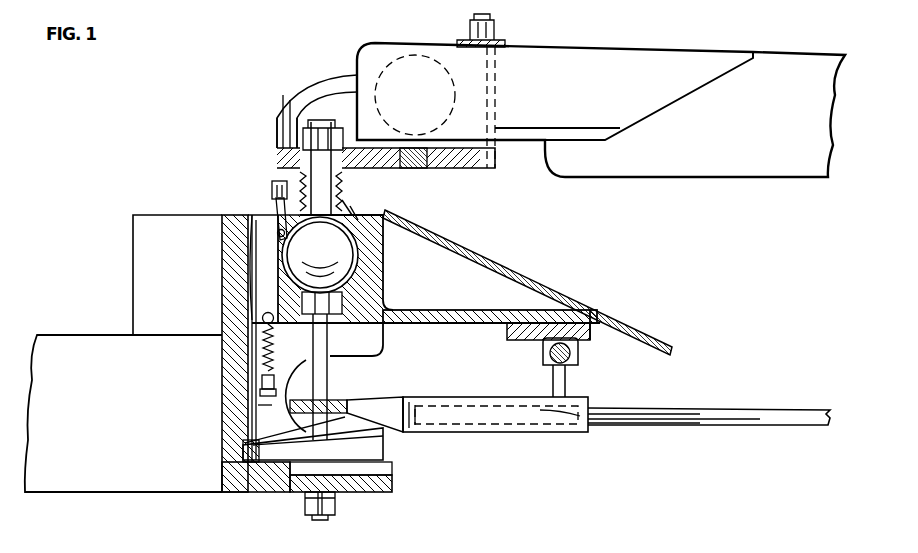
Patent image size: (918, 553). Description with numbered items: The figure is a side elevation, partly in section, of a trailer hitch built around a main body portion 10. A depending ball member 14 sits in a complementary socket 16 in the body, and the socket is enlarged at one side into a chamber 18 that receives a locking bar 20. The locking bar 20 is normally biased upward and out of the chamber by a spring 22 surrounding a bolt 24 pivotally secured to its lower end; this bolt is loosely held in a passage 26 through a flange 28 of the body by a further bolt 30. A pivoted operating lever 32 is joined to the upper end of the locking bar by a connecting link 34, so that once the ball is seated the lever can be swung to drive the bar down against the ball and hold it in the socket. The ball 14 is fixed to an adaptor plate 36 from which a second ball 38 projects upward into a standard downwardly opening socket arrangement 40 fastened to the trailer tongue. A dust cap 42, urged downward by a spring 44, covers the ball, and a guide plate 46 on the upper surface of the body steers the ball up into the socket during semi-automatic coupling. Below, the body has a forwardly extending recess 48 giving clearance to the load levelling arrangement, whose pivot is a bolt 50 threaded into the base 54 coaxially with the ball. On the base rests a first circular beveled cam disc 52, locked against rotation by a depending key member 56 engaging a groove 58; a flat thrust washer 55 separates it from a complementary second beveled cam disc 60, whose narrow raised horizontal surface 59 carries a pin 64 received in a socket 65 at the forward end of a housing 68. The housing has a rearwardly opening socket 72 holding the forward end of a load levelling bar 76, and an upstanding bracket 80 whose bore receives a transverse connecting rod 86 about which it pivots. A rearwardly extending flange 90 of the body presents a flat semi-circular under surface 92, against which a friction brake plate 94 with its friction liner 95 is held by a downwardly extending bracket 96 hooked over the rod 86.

The main body portion 10 is at (236, 262).
The depending ball member 14 is at (345, 243).
The socket 16 is at (366, 268).
The chamber 18 is at (259, 225).
The locking bar 20 is at (257, 295).
The spring 22 is at (262, 328).
The bolt 24 is at (262, 352).
The passage 26 is at (259, 384).
The flange 28 is at (280, 385).
The bolt 30 is at (259, 393).
The pivoted operating lever 32 is at (278, 182).
The connecting link 34 is at (280, 210).
The adaptor plate 36 is at (456, 168).
The ball 38 is at (415, 68).
The socket arrangement 40 is at (395, 72).
The dust cap 42 is at (350, 215).
The spring 44 is at (342, 180).
The guide plate 46 is at (504, 270).
The recess 48 is at (376, 360).
The bolt 50 is at (322, 378).
The first circular beveled cam disc 52 is at (383, 445).
The base 54 is at (388, 490).
The flat thrust washer 55 is at (259, 445).
The key member 56 is at (385, 475).
The groove 58 is at (300, 490).
The horizontal surface 59 is at (259, 409).
The second beveled cam disc 60 is at (385, 428).
The pin 64 is at (356, 401).
The socket 65 is at (330, 401).
The housing 68 is at (400, 399).
The socket 72 is at (548, 420).
The load levelling bar 76 is at (695, 422).
The bracket 80 is at (565, 380).
The connecting rod 86 is at (570, 356).
The flange 90 is at (462, 318).
The under surface 92 is at (464, 323).
The friction brake plate 94 is at (588, 328).
The friction liner 95 is at (509, 333).
The bracket 96 is at (541, 358).